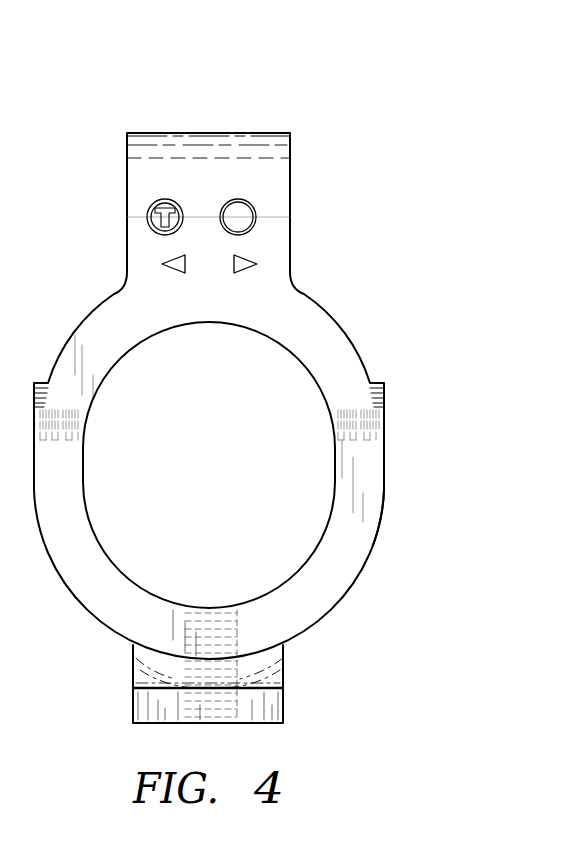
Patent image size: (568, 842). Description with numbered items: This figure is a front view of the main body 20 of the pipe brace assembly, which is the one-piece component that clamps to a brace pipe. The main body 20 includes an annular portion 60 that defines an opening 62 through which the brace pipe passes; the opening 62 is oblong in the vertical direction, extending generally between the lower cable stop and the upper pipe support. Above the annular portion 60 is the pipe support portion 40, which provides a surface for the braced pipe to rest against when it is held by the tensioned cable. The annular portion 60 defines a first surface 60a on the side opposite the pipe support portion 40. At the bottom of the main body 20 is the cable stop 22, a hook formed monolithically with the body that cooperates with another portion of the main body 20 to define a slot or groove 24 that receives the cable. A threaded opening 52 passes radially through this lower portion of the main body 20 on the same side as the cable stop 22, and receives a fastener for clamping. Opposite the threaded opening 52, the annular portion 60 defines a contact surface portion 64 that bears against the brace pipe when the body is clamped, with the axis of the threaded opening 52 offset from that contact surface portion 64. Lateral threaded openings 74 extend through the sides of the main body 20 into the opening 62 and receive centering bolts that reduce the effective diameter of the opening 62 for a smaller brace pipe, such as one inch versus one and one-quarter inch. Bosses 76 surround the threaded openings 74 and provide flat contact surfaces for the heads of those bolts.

The pipe support portion 40 is at (243, 82).
The main body 20 is at (355, 150).
The cable stop 22 is at (285, 704).
The slot or groove 24 is at (150, 671).
The threaded opening 52 is at (232, 630).
The annular portion 60 is at (388, 465).
The first surface 60a is at (378, 500).
The opening 62 is at (110, 562).
The contact surface portion 64 is at (207, 324).
The threaded openings 74 is at (386, 428).
The bosses 76 is at (384, 386).